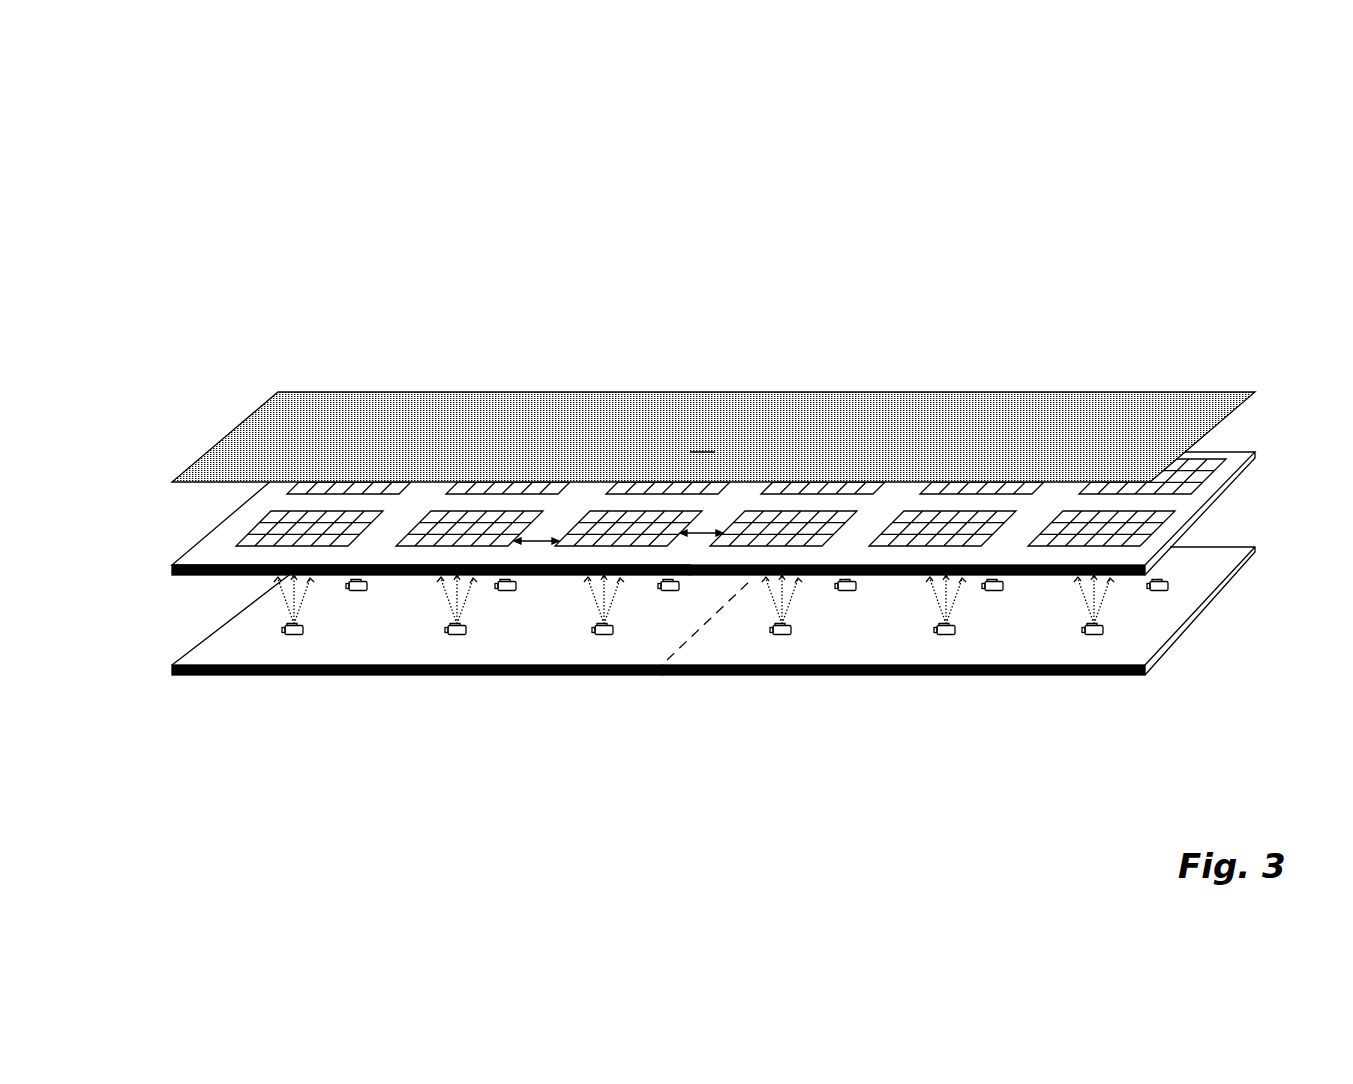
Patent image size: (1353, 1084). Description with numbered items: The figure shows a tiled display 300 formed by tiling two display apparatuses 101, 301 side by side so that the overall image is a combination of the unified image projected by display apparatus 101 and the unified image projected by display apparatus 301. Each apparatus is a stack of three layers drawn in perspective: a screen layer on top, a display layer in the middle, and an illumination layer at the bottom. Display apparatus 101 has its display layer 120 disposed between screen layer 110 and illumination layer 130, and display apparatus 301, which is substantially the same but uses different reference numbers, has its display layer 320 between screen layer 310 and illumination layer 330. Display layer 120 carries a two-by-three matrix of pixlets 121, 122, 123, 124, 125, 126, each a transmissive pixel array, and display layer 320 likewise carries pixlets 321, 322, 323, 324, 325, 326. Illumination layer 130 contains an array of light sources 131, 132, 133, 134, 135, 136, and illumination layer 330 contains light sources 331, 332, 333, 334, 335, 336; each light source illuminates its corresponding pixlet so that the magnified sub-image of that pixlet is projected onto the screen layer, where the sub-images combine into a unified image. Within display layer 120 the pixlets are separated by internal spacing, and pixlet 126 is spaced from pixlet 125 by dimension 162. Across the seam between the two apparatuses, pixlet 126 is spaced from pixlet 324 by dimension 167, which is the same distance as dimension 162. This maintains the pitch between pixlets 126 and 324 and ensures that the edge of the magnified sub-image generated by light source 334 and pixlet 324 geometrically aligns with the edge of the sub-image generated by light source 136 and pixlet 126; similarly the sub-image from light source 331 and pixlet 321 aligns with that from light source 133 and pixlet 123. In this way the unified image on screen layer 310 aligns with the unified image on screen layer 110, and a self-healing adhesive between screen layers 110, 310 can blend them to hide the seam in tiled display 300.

The tiled display 300 is at (208, 213).
The display apparatus 101 is at (488, 350).
The display apparatus 301 is at (895, 353).
The screen layer 110 is at (232, 420).
The screen layer 310 is at (1022, 432).
The display layer 120 is at (203, 542).
The display layer 320 is at (1252, 452).
The illumination layer 130 is at (217, 643).
The illumination layer 330 is at (1180, 600).
The pixlet 121 is at (288, 489).
The pixlet 122 is at (447, 497).
The pixlet 123 is at (602, 497).
The pixlet 124 is at (310, 549).
The pixlet 125 is at (459, 547).
The pixlet 126 is at (610, 548).
The pixlet 321 is at (779, 498).
The pixlet 322 is at (921, 498).
The pixlet 323 is at (1074, 498).
The pixlet 324 is at (801, 549).
The pixlet 325 is at (943, 549).
The pixlet 326 is at (1064, 548).
The light source 131 is at (353, 590).
The light source 132 is at (509, 592).
The light source 133 is at (667, 590).
The light source 134 is at (288, 636).
The light source 135 is at (453, 636).
The light source 136 is at (600, 637).
The light source 331 is at (845, 592).
The light source 332 is at (1000, 593).
The light source 333 is at (1157, 591).
The light source 334 is at (774, 636).
The light source 335 is at (945, 637).
The light source 336 is at (1091, 637).
The dimension 162 is at (540, 543).
The dimension 167 is at (700, 538).